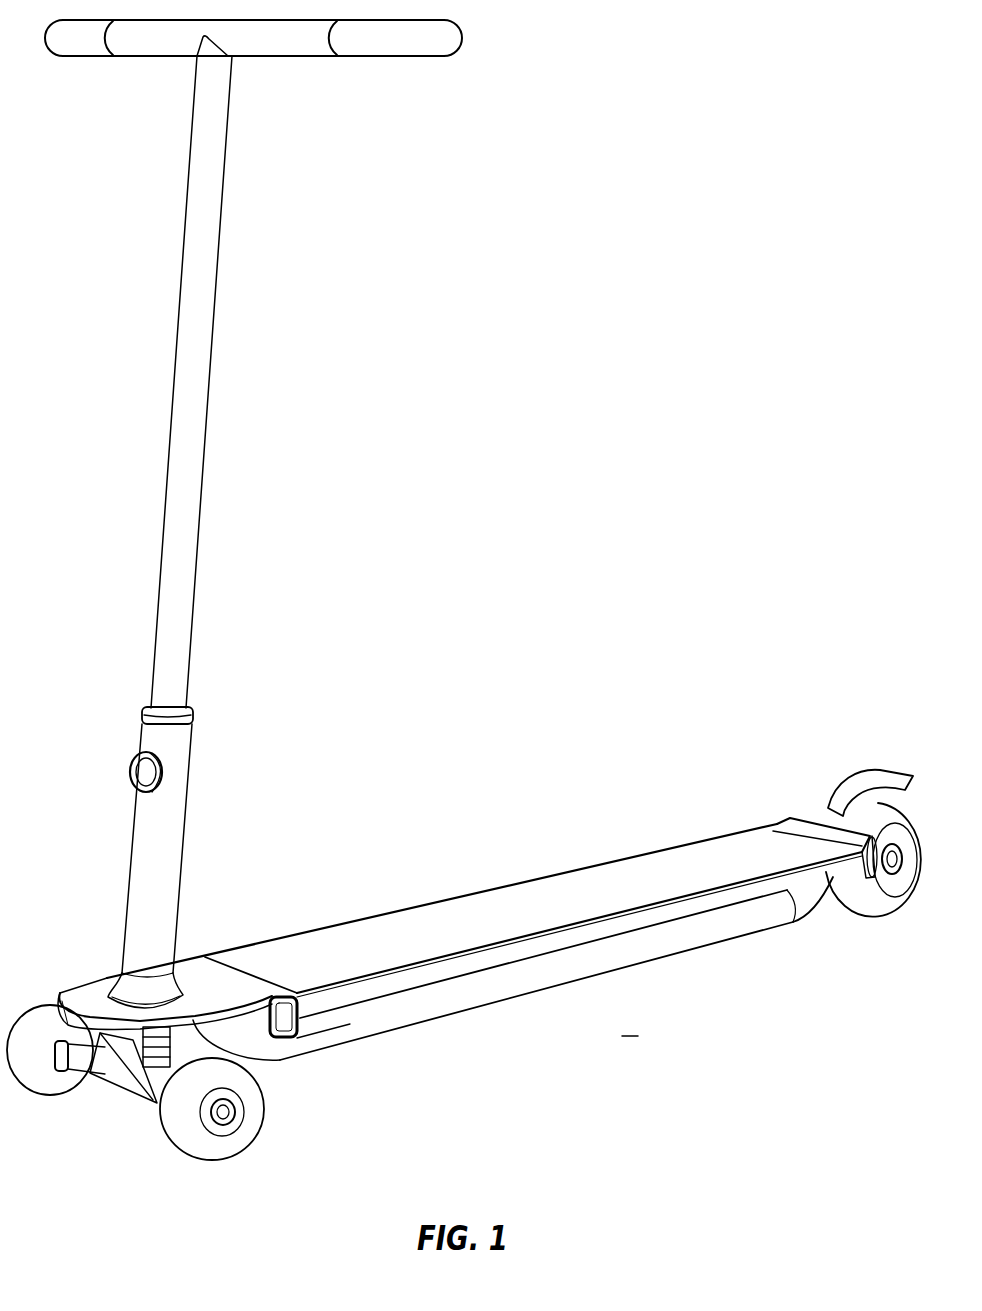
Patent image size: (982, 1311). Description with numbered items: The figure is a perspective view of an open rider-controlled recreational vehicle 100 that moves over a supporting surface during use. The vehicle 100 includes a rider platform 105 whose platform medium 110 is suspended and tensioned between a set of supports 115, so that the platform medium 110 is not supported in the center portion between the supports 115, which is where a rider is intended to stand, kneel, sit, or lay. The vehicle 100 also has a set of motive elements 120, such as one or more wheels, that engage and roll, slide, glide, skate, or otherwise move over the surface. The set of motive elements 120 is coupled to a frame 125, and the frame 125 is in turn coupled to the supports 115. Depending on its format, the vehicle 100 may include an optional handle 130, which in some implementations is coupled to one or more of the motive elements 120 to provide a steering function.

The open rider-controlled recreational vehicle 100 is at (464, 606).
The rider platform 105 is at (580, 822).
The platform medium 110 is at (480, 913).
The set of supports 115 is at (285, 1017).
The set of motive elements 120 is at (180, 1132).
The frame 125 is at (497, 992).
The handle 130 is at (196, 357).